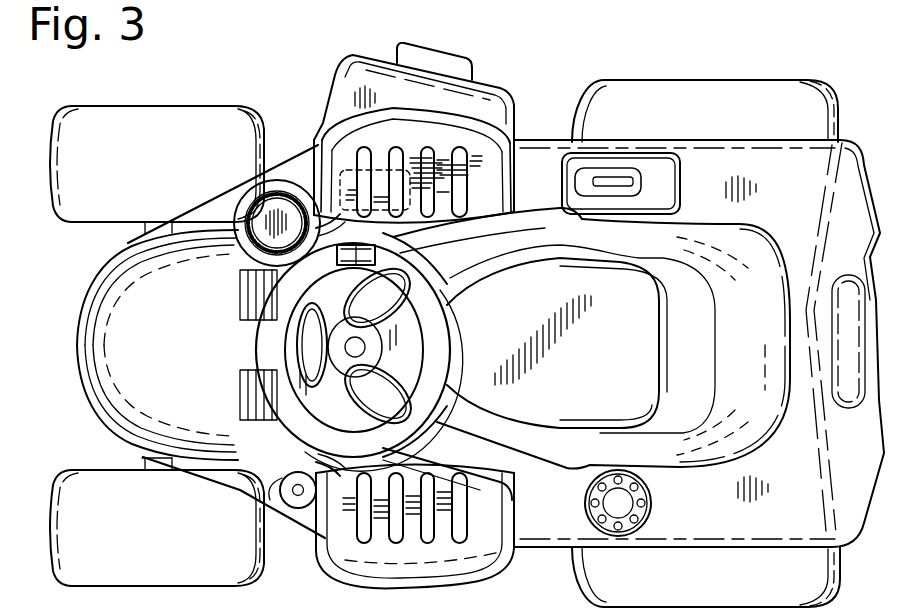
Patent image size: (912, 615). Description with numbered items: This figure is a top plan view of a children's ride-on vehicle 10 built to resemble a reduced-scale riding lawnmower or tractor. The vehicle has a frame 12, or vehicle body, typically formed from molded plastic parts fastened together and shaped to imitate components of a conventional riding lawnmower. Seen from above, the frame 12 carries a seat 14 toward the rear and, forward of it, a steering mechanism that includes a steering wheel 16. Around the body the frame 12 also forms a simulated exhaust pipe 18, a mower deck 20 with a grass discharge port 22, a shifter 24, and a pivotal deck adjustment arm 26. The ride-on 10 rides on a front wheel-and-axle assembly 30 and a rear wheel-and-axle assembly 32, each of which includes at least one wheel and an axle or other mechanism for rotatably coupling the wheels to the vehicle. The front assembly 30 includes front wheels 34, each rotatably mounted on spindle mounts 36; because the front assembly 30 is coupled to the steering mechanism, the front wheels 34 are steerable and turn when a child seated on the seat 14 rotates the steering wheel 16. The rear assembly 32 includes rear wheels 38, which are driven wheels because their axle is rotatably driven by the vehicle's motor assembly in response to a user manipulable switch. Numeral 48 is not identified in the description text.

The children's ride-on vehicle 10 is at (236, 75).
The frame 12 is at (68, 340).
The seat 14 is at (624, 384).
The steering wheel 16 is at (256, 348).
The exhaust pipe 18 is at (272, 182).
The mower deck 20 is at (492, 146).
The grass discharge port 22 is at (470, 73).
The shifter 24 is at (608, 166).
The pivotal deck adjustment arm 26 is at (300, 528).
The front wheel-and-axle assembly 30 is at (100, 460).
The rear wheel-and-axle assembly 32 is at (870, 528).
The front wheels 34 is at (173, 178).
The spindle mounts 36 is at (130, 235).
The rear wheels 38 is at (718, 127).
The grille vents 48 is at (352, 170).